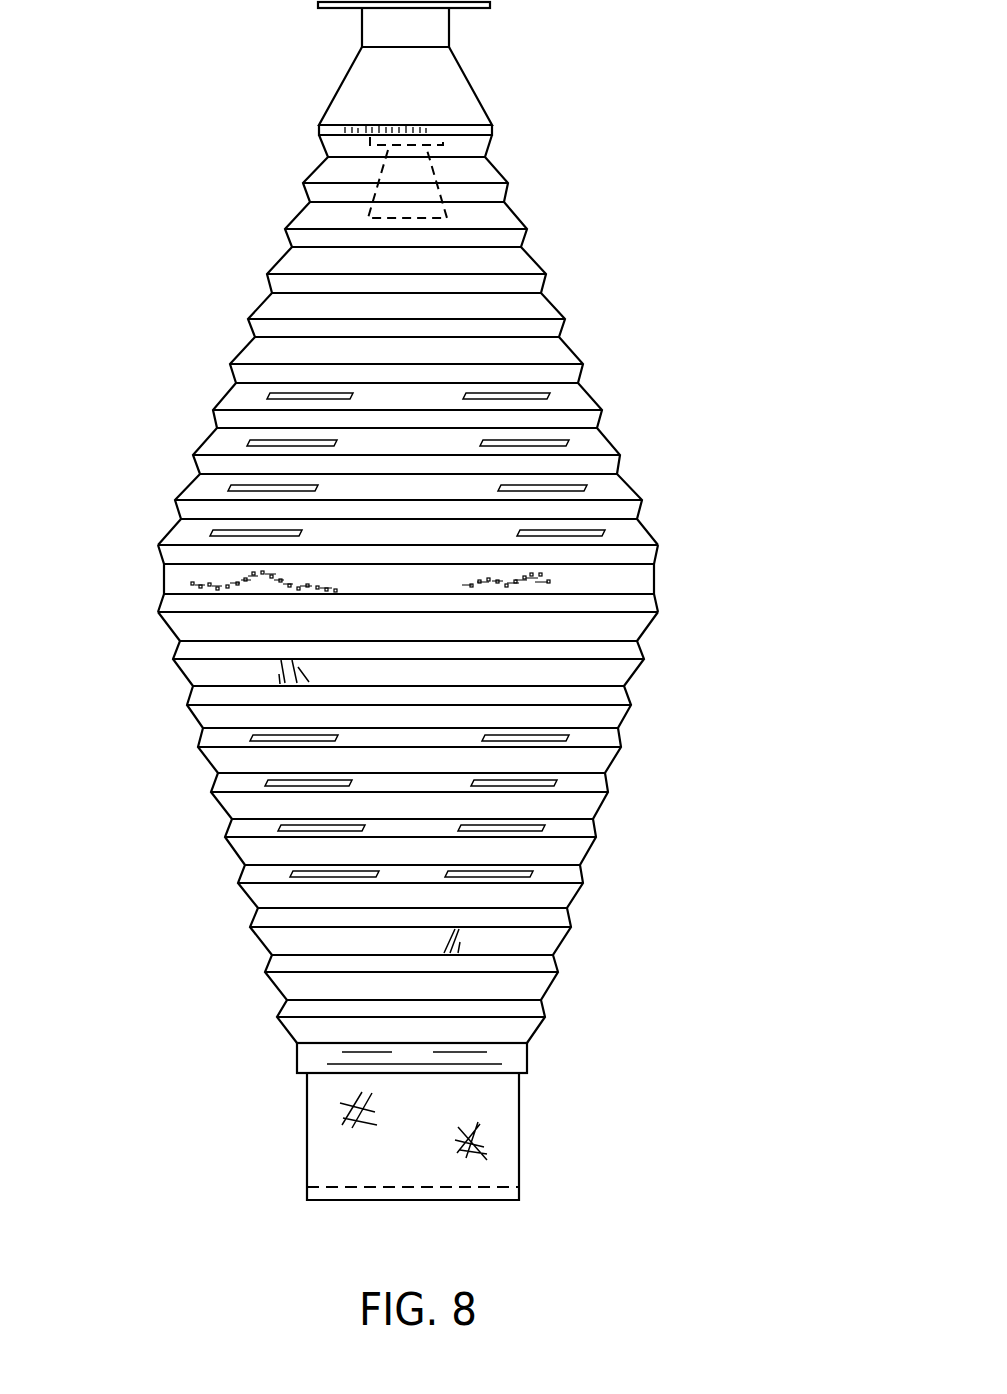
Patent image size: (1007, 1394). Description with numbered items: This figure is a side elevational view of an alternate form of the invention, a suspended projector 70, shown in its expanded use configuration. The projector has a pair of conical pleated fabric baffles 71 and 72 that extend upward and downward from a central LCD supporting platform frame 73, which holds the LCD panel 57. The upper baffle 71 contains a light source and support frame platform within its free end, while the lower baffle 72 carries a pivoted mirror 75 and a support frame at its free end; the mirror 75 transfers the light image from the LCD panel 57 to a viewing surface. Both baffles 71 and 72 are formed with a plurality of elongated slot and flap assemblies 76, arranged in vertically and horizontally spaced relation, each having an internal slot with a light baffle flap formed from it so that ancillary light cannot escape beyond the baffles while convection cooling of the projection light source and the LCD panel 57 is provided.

The suspended projector 70 is at (405, 601).
The conical pleated fabric baffle 71 is at (368, 191).
The conical pleated fabric baffle 72 is at (602, 762).
The central LCD supporting platform frame 73 is at (645, 577).
The pivoted mirror 75 is at (503, 1112).
The slot and flap assemblies 76 is at (256, 405).
The LCD panel 57 is at (187, 573).